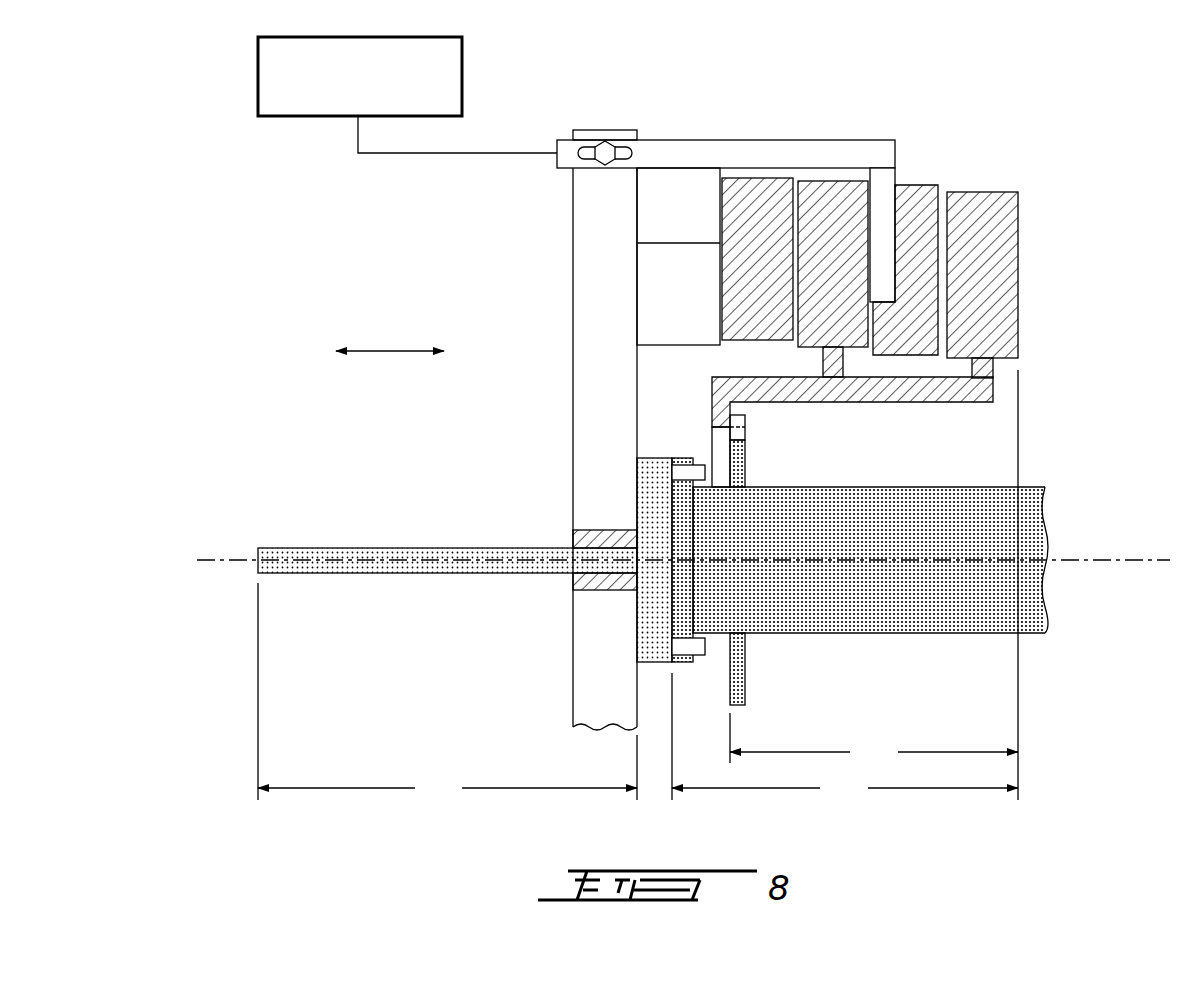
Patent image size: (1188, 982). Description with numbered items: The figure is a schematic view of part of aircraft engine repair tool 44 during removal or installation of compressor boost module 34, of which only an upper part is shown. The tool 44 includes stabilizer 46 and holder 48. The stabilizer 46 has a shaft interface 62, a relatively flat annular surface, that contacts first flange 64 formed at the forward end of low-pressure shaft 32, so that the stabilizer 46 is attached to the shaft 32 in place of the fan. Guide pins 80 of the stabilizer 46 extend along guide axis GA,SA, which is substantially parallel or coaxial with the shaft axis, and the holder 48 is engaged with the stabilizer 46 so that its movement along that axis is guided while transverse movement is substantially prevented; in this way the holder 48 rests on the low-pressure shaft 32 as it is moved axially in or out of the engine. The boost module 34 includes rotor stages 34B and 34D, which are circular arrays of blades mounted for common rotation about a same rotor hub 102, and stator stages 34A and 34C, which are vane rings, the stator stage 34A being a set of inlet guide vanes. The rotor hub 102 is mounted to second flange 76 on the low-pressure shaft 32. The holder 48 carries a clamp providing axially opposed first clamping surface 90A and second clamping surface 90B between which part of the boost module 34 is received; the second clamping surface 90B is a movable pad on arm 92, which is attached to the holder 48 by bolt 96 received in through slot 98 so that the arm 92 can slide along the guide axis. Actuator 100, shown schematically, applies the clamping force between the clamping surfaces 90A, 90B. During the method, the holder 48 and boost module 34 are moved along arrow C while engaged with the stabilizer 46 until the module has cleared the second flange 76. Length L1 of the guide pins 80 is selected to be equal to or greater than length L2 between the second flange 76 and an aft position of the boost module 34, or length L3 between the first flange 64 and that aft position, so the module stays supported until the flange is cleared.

The actuator 100 is at (258, 73).
The aircraft engine repair tool 44 is at (210, 197).
The through slot 98 is at (580, 150).
The bolt 96 is at (605, 148).
The arm 92 is at (663, 150).
The first clamping surface 90A is at (748, 268).
The second clamping surface 90B is at (862, 207).
The stator stage 34A is at (750, 200).
The rotor stage 34B is at (817, 205).
The stator stage 34C is at (915, 195).
The rotor stage 34D is at (975, 205).
The compressor boost module 34 is at (1045, 295).
The holder 48 is at (603, 288).
The rotor hub 102 is at (990, 390).
The second flange 76 is at (745, 470).
The low-pressure shaft 32 is at (922, 510).
The stabilizer 46 is at (640, 515).
The first flange 64 is at (675, 498).
The guide pin 80 is at (368, 555).
The shaft interface 62 is at (580, 580).
The arrow C is at (388, 351).
The guide axis and shaft axis GA,SA is at (212, 560).
The length of guide pins L1 is at (447, 789).
The length L2 is at (874, 753).
The length L3 is at (845, 789).